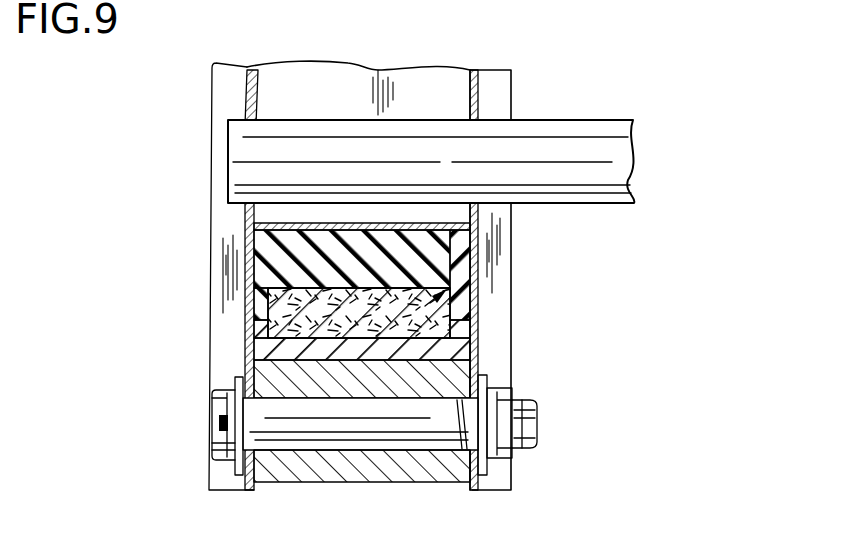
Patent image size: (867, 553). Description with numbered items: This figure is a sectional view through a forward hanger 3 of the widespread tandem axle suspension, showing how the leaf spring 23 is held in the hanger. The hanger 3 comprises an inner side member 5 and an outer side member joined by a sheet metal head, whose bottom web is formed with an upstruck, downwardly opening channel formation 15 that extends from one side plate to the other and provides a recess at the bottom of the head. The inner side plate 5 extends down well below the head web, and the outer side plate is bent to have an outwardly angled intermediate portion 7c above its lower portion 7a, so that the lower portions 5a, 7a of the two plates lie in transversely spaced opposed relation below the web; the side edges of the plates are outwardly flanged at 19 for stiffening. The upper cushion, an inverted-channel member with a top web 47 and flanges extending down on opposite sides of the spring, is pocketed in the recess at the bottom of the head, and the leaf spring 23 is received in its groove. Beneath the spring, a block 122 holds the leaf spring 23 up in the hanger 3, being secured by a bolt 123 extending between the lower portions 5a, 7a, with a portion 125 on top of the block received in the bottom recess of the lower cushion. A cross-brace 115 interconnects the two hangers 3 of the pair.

The hanger 3 is at (165, 156).
The inner side member 5 is at (486, 96).
The lower portion of inner side plate 5a is at (480, 342).
The lower portion of outer side plate 7a is at (245, 251).
The outwardly angled intermediate portion 7c is at (247, 96).
The channel formation 15 is at (357, 224).
The stiffening flange 19 is at (222, 222).
The leaf spring 23 is at (480, 290).
The top web 47 is at (478, 253).
The cross-brace 115 is at (573, 120).
The block 122 is at (372, 484).
The bolt 123 is at (214, 428).
The portion on top of block 125 is at (258, 376).